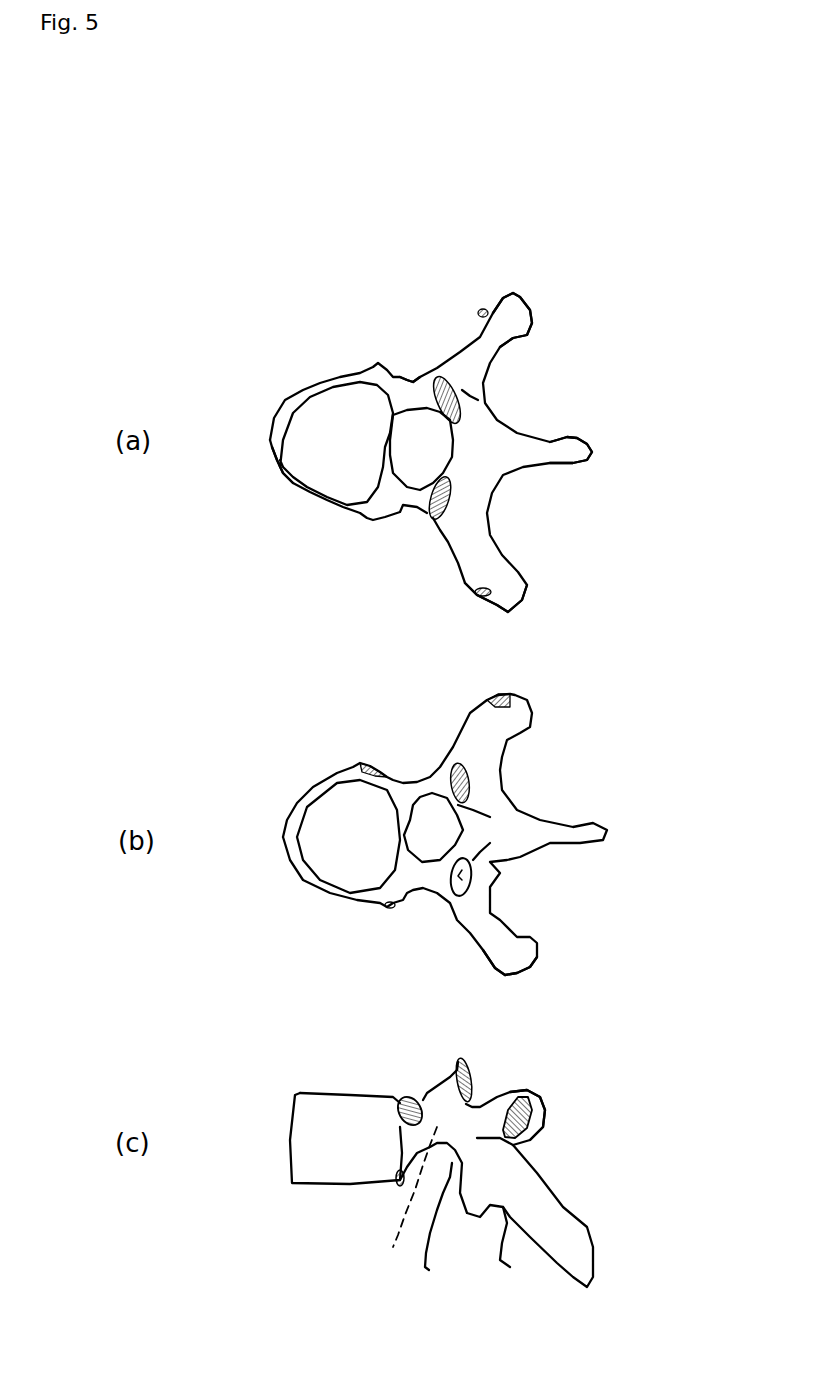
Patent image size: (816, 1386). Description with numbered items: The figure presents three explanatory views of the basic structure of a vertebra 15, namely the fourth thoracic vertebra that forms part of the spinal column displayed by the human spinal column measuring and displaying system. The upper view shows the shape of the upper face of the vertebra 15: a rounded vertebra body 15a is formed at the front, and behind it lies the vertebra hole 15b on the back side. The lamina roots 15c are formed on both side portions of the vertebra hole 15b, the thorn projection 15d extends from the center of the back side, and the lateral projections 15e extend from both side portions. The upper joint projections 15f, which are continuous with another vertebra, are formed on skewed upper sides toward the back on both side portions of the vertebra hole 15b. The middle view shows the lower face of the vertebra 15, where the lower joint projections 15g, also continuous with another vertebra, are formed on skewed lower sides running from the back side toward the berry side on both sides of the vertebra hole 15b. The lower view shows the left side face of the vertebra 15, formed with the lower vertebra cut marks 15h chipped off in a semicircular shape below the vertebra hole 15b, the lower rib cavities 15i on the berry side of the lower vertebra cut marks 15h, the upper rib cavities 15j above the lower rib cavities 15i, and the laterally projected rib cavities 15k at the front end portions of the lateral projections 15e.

The vertebra 15 is at (475, 752).
The vertebra body 15a is at (264, 403).
The vertebra hole 15b is at (470, 842).
The lamina roots 15c is at (404, 327).
The thorn projection 15d is at (616, 452).
The lateral projections 15e is at (596, 716).
The upper joint projections 15f is at (549, 738).
The lower joint projections 15g is at (568, 1030).
The lower vertebra cut marks 15h is at (427, 1234).
The lower rib cavities 15i is at (340, 1206).
The upper rib cavities 15j is at (325, 1078).
The laterally projected rib cavities 15k is at (564, 1121).